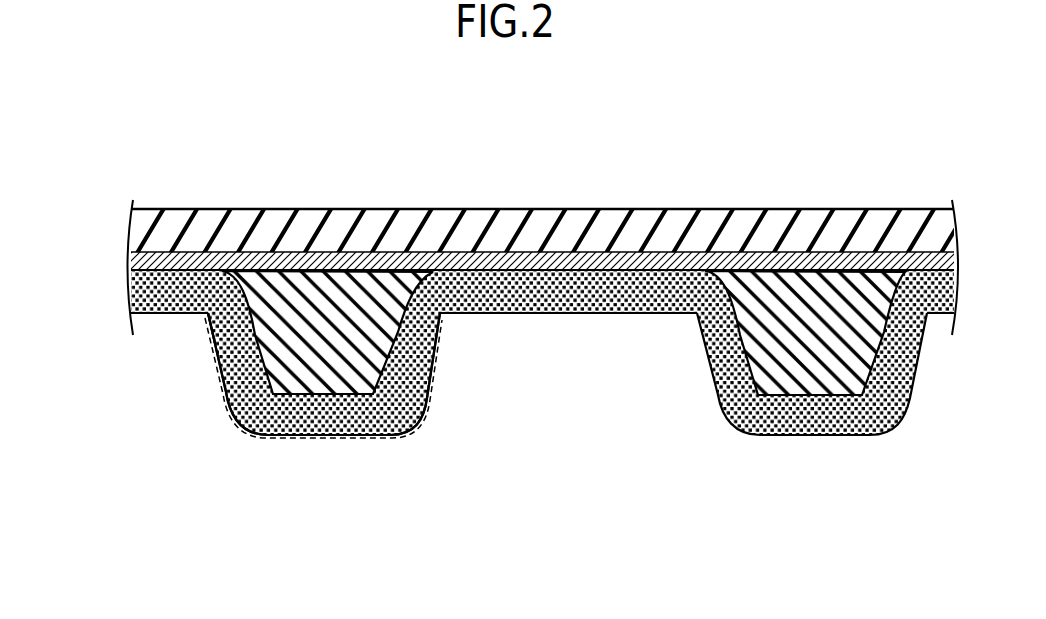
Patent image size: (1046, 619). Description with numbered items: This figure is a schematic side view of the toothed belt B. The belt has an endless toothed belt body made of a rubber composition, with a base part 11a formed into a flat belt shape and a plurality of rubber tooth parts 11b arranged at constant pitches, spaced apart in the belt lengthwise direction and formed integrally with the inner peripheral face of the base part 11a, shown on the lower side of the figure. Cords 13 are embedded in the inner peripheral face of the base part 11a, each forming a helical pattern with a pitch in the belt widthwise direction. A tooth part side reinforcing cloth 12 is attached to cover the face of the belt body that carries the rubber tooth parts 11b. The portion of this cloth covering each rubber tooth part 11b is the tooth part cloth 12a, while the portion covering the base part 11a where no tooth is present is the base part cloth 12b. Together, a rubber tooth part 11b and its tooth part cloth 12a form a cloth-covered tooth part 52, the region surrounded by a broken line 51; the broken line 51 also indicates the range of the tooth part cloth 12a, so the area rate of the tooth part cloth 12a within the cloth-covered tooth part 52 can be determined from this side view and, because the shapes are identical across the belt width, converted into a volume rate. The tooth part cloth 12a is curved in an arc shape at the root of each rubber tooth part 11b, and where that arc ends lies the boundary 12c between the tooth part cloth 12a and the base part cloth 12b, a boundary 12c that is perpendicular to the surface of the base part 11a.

The toothed belt B is at (345, 172).
The base part 11a is at (242, 218).
The rubber tooth part 11b is at (286, 383).
The tooth part side reinforcing cloth 12 is at (129, 290).
The tooth part cloth 12a is at (367, 418).
The base part cloth 12b is at (567, 296).
The boundary 12c is at (204, 320).
The cord 13 is at (550, 266).
The broken line 51 is at (436, 323).
The cloth-covered tooth part 52 is at (400, 519).